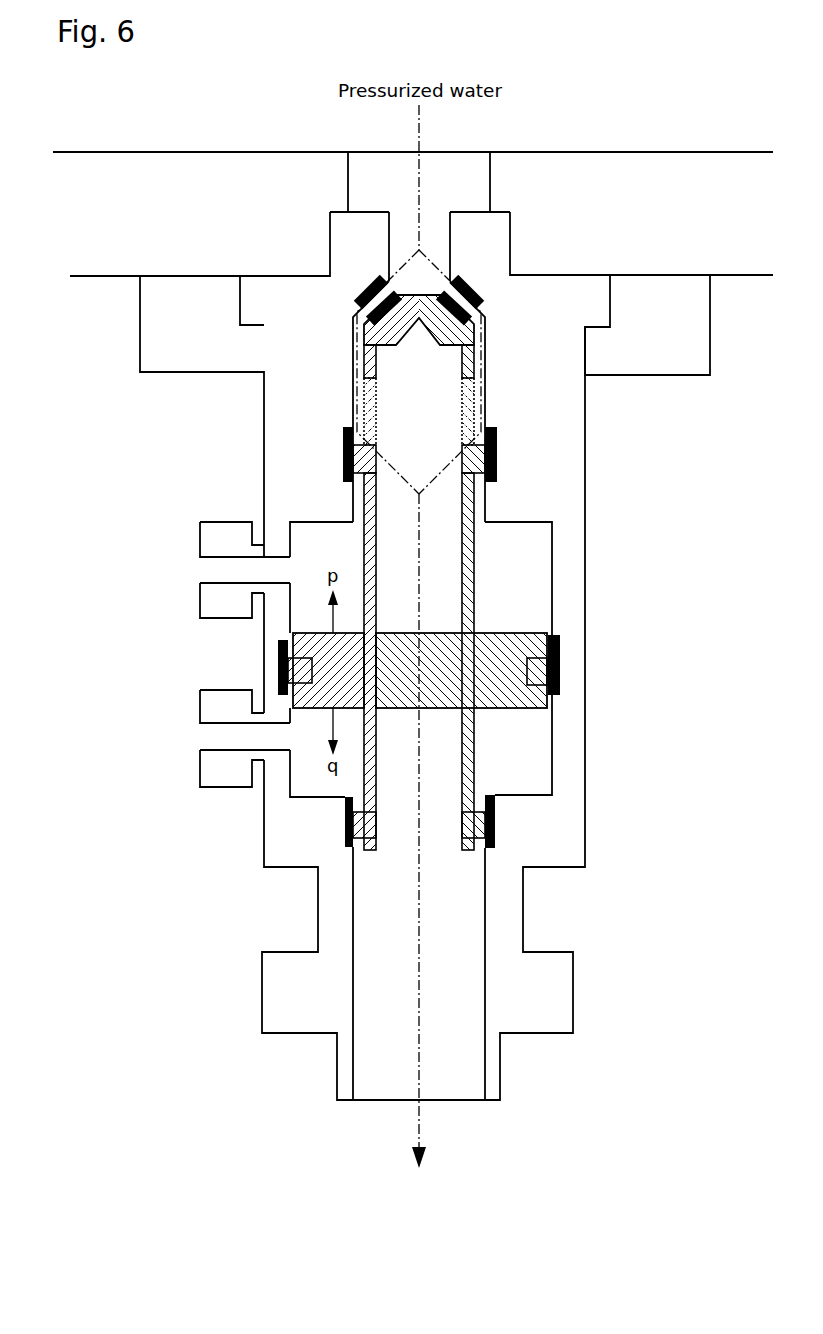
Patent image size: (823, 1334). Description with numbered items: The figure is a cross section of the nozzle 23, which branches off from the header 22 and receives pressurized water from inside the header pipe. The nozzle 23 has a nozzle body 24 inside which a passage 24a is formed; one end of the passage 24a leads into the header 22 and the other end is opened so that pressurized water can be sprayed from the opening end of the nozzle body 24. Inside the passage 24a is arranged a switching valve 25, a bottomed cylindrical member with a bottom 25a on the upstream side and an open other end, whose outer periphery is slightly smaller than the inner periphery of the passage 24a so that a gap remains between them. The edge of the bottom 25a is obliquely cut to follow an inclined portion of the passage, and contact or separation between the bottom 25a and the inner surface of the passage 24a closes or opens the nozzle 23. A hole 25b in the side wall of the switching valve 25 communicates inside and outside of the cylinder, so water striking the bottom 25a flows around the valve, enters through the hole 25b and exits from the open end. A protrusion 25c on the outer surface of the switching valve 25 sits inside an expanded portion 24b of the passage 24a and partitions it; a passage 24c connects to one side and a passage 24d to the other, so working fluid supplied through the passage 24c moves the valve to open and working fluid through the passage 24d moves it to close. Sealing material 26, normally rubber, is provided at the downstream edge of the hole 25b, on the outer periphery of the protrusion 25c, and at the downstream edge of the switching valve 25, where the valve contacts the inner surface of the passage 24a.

The header 22 is at (68, 297).
The nozzle 23 is at (205, 1090).
The nozzle body 24 is at (283, 990).
The passage 24a is at (450, 1065).
The expanded portion 24b is at (533, 765).
The passage 24c is at (192, 574).
The passage 24d is at (192, 742).
The switching valve 25 is at (373, 778).
The bottom 25a is at (458, 335).
The hole 25b is at (468, 412).
The protrusion 25c is at (512, 647).
The sealing material 26 is at (468, 458).